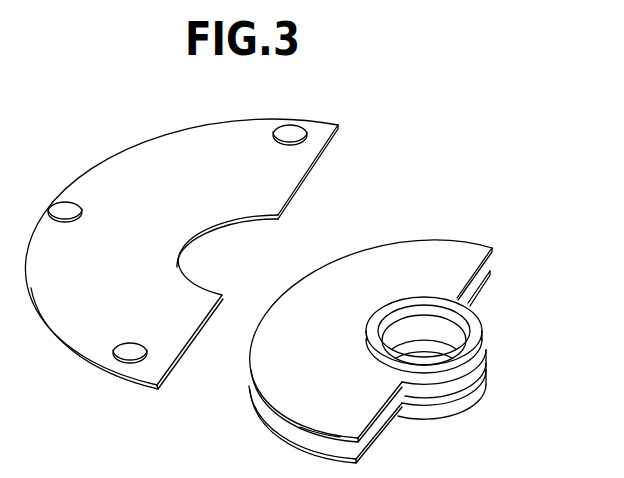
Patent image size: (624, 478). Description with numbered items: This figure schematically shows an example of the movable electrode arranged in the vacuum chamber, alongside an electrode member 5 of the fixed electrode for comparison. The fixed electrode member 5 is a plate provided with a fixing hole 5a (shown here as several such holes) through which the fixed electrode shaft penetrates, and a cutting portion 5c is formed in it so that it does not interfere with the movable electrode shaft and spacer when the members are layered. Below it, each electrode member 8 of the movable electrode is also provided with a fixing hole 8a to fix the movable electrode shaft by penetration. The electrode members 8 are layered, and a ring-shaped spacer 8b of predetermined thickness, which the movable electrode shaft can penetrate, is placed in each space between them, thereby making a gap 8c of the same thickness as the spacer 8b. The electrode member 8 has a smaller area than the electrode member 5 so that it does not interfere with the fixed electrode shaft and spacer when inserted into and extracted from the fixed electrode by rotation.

The electrode member 5 is at (300, 162).
The fixing hole 5a is at (287, 135).
The cutting portion 5c is at (232, 253).
The electrode member 8 is at (401, 332).
The fixing hole 8a is at (453, 340).
The ring-shaped spacer 8b is at (477, 330).
The gap 8c is at (298, 428).